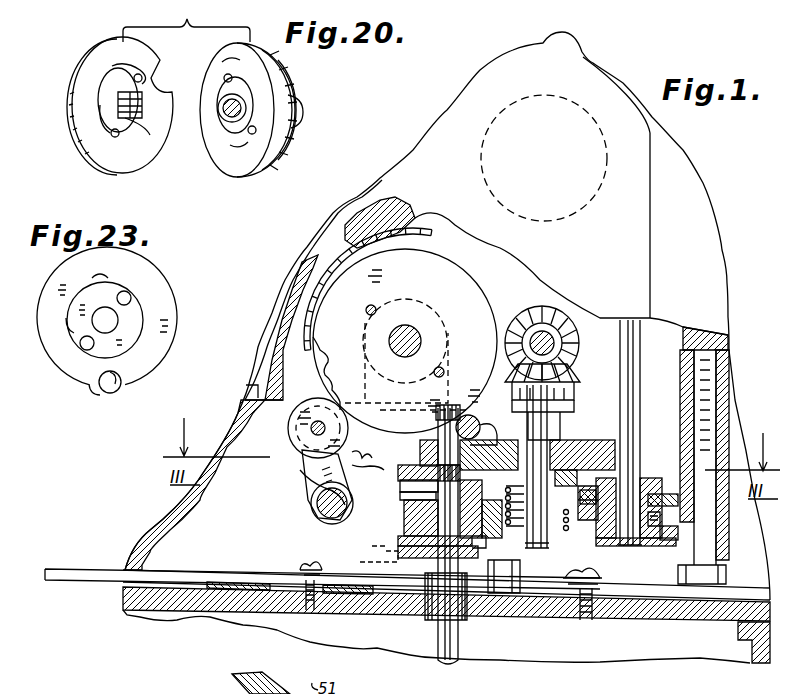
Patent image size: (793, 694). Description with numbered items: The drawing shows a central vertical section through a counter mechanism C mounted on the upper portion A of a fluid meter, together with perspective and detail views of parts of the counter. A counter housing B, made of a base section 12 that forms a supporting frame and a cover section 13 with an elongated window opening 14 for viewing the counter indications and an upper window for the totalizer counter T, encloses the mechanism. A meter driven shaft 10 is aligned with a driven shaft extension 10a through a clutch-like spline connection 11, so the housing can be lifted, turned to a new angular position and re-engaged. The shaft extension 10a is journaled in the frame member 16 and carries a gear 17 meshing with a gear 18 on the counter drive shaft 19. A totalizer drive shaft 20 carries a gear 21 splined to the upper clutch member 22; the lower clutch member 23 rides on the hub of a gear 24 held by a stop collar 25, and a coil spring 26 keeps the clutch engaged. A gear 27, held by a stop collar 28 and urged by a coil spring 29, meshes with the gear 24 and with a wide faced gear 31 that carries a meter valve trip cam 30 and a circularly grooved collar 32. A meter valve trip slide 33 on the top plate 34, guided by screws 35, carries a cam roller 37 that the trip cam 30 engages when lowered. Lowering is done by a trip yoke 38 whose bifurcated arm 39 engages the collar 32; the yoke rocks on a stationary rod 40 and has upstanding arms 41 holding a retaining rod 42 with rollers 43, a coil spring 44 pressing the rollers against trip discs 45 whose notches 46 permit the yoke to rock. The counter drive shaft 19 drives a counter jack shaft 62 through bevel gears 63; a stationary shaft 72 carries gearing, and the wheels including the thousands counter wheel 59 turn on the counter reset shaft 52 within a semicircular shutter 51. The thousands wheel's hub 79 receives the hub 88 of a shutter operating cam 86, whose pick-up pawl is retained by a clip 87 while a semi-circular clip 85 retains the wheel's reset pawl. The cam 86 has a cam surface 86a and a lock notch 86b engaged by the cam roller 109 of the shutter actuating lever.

In FIG. 1, the meter driven shaft 10 is at (458, 645).
In FIG. 1, the driven shaft extension 10a is at (438, 450).
In FIG. 1, the clutch-like spline connection 11 is at (437, 600).
In FIG. 1, the base section 12 is at (186, 500).
In FIG. 1, the cover section 13 is at (264, 372).
In FIG. 1, the elongated window opening 14 is at (308, 288).
In FIG. 1, the frame member 16 is at (469, 455).
In FIG. 1, the gear 17 is at (410, 468).
In FIG. 1, the gear 18 is at (568, 455).
In FIG. 1, the counter drive shaft 19 is at (540, 412).
In FIG. 1, the totalizer drive shaft 20 is at (640, 392).
In FIG. 1, the gear 21 is at (648, 465).
In FIG. 1, the upper clutch member 22 is at (660, 472).
In FIG. 1, the lower clutch member 23 is at (678, 507).
In FIG. 1, the gear 24 is at (660, 540).
In FIG. 1, the stop collar 25 is at (645, 548).
In FIG. 1, the coil spring 26 is at (662, 522).
In FIG. 1, the gear 27 is at (575, 538).
In FIG. 1, the stop collar 28 is at (552, 545).
In FIG. 1, the coil spring 29 is at (510, 532).
In FIG. 1, the meter valve trip cam 30 is at (372, 546).
In FIG. 1, the wide faced gear 31 is at (400, 522).
In FIG. 1, the circularly grooved collar 32 is at (405, 492).
In FIG. 1, the meter valve trip slide 33 is at (105, 555).
In FIG. 1, the top plate 34 is at (358, 605).
In FIG. 1, the screws 35 is at (600, 574).
In FIG. 1, the cam roller 37 is at (520, 595).
In FIG. 1, the trip yoke 38 is at (368, 453).
In FIG. 1, the bifurcated arm 39 is at (400, 504).
In FIG. 1, the stationary rod 40 is at (325, 512).
In FIG. 1, the upstanding arms 41 is at (315, 457).
In FIG. 1, the retaining rod 42 is at (311, 430).
In FIG. 1, the rollers 43 is at (298, 414).
In FIG. 1, the coil spring 44 is at (312, 487).
In FIG. 1, the trip discs 45 is at (478, 300).
In FIG. 1, the notches 46 is at (332, 368).
In FIG. 1, the shield or shutter 51 is at (316, 318).
In FIG. 1, the counter reset shaft 52 is at (407, 352).
In FIG. 20, the thousands counter wheel 59 is at (308, 125).
In FIG. 1, the counter jack shaft 62 is at (556, 340).
In FIG. 1, the bevel gears 63 is at (566, 362).
In FIG. 1, the stationary shaft 72 is at (456, 420).
In FIG. 20, the hub 79 is at (233, 122).
In FIG. 20, the semi-circular clip 85 is at (255, 90).
In FIG. 20, the shutter operating cam 86 is at (94, 143).
In FIG. 23, the shutter operating cam 86 is at (155, 292).
In FIG. 23, the cam surface 86a is at (93, 384).
In FIG. 23, the lock notch 86b is at (125, 384).
In FIG. 20, the clip 87 is at (110, 97).
In FIG. 20, the hub 88 is at (150, 115).
In FIG. 23, the cam roller 109 is at (108, 385).
In FIG. 1, the upper portion of fluid meter A is at (758, 645).
In FIG. 1, the counter housing B is at (668, 155).
In FIG. 1, the counter mechanism C is at (473, 263).
In FIG. 1, the totalizer counter T is at (578, 105).